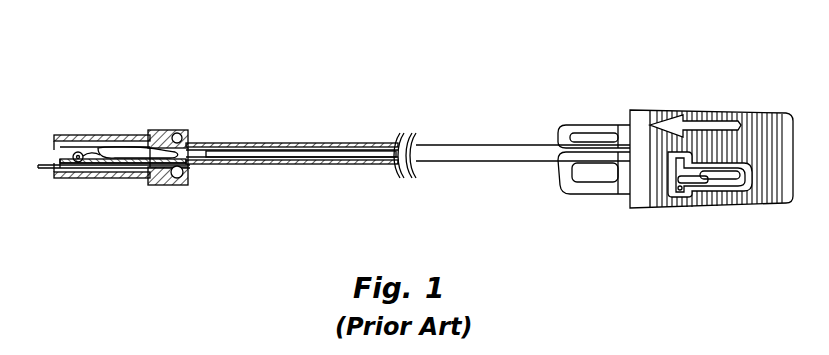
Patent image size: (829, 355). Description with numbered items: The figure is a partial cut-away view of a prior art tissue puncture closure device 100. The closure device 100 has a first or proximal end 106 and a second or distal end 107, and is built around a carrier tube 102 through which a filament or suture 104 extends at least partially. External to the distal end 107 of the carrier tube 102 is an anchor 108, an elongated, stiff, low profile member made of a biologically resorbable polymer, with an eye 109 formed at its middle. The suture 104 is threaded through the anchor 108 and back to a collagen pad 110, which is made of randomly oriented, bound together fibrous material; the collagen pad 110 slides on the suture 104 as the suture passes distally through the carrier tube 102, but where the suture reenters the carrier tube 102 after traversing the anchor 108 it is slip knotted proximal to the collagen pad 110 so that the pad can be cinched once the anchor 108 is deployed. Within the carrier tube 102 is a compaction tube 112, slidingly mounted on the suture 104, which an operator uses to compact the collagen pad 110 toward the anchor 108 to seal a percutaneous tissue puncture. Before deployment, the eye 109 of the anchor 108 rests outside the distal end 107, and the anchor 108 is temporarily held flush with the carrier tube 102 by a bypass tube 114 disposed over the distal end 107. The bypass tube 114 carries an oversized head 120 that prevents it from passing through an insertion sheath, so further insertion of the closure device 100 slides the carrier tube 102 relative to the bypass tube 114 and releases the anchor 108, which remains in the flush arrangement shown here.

The tissue puncture closure device 100 is at (402, 96).
The carrier tube 102 is at (308, 143).
The suture 104 is at (191, 150).
The proximal end 106 is at (619, 103).
The distal end 107 is at (112, 128).
The anchor 108 is at (46, 136).
The eye 109 is at (44, 178).
The collagen pad 110 is at (127, 178).
The compaction tube 112 is at (270, 158).
The bypass tube 114 is at (112, 178).
The oversized head 120 is at (178, 188).